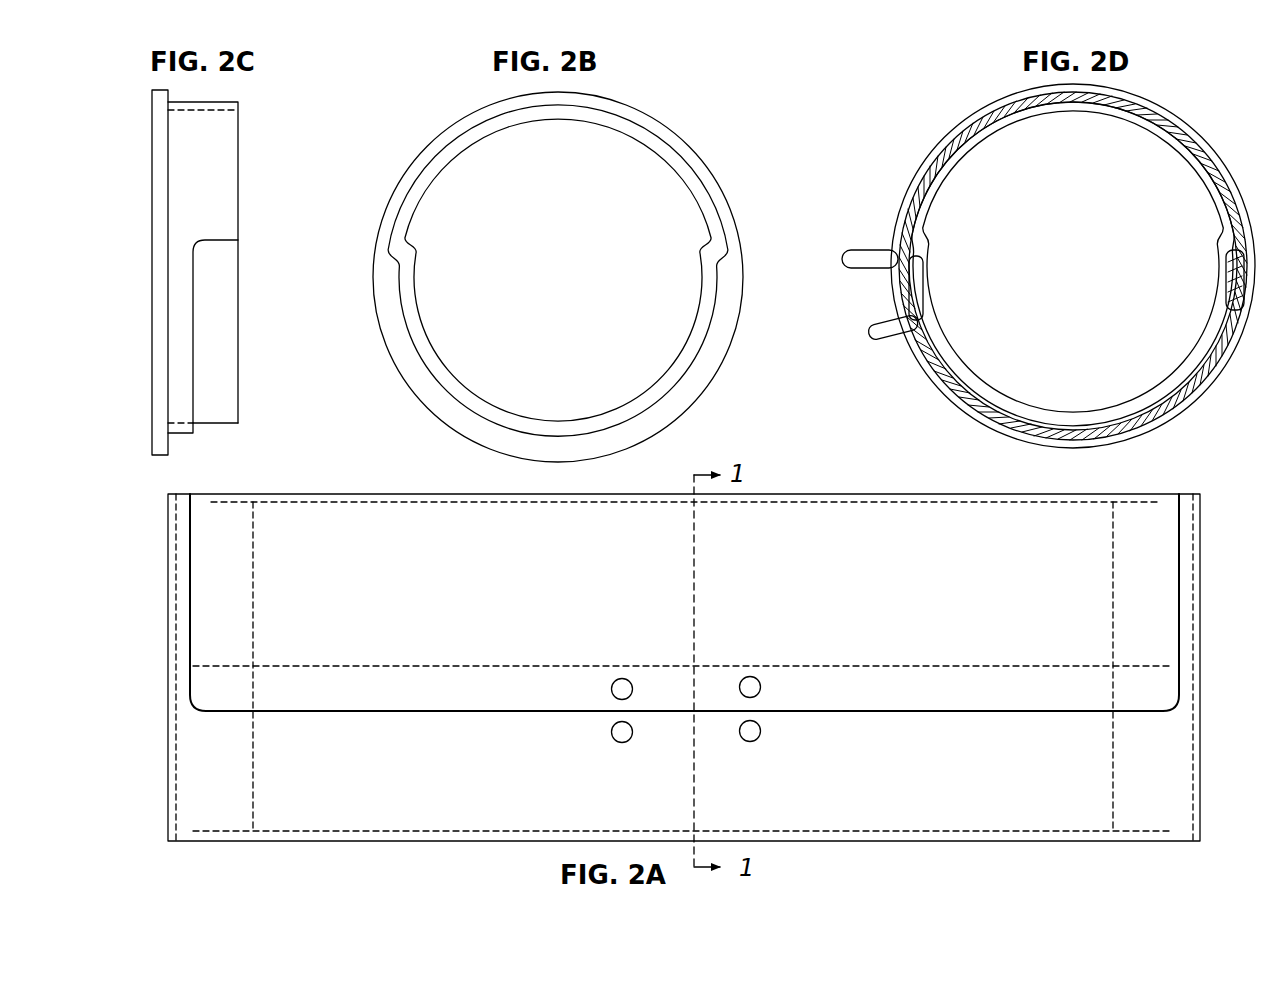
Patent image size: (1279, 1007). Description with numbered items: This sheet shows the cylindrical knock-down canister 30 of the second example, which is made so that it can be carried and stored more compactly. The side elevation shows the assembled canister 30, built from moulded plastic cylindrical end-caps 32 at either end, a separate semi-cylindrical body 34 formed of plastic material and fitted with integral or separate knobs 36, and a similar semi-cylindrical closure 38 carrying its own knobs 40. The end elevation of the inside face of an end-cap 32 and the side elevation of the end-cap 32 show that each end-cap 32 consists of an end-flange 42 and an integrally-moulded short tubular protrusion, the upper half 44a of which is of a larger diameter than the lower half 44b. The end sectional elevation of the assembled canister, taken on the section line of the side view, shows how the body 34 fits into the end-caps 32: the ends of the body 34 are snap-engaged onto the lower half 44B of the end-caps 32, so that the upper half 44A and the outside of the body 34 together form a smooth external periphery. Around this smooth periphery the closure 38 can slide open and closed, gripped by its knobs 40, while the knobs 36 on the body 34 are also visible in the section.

In FIG. 2A, the canister 30 is at (836, 486).
In FIG. 2C, the end-cap 32 is at (250, 161).
In FIG. 2B, the end-cap 32 is at (678, 130).
In FIG. 2D, the end-cap 32 is at (932, 378).
In FIG. 2A, the end-cap 32 is at (166, 684).
In FIG. 2D, the semi-cylindrical body 34 is at (1163, 400).
In FIG. 2A, the semi-cylindrical body 34 is at (1003, 793).
In FIG. 2D, the knob 36 is at (880, 342).
In FIG. 2A, the knob 36 is at (613, 741).
In FIG. 2A, the semi-cylindrical closure 38 is at (999, 590).
In FIG. 2D, the knob 40 is at (862, 252).
In FIG. 2A, the knob 40 is at (631, 680).
In FIG. 2C, the end-flange 42 is at (155, 182).
In FIG. 2B, the end-flange 42 is at (567, 269).
In FIG. 2D, the end-flange 42 is at (1092, 269).
In FIG. 2B, the upper half of tubular protrusion 44A is at (447, 143).
In FIG. 2D, the upper half of tubular protrusion 44A is at (928, 212).
In FIG. 2D, the lower half of tubular protrusion 44B is at (945, 298).
In FIG. 2C, the upper half of tubular protrusion 44a is at (202, 203).
In FIG. 2C, the lower half of tubular protrusion 44b is at (208, 360).
In FIG. 2B, the lower half of tubular protrusion 44b is at (532, 427).